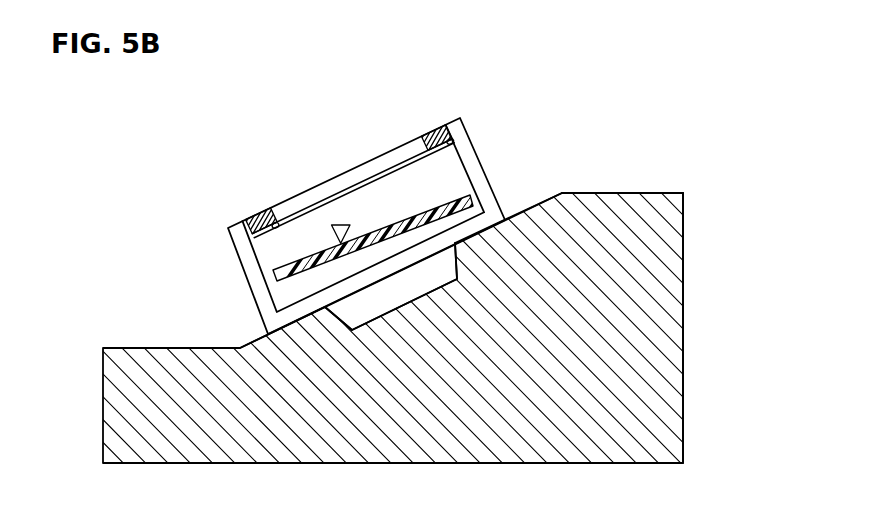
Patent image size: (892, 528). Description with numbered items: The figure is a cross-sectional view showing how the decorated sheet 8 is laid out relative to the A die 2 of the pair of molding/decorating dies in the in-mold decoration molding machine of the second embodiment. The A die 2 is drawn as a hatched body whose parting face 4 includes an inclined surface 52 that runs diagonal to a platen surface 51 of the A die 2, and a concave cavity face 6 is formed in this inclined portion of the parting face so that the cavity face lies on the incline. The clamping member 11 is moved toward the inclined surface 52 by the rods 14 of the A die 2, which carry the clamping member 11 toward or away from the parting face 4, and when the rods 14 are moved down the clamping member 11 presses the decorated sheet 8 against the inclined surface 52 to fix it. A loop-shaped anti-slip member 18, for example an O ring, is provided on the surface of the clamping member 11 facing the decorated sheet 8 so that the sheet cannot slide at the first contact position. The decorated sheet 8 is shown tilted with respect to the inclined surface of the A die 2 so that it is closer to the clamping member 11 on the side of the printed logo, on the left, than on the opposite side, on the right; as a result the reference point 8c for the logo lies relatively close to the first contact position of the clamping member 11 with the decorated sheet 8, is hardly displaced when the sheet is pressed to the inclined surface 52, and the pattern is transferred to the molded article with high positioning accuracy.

The A die 2 is at (669, 188).
The parting face 4 is at (158, 348).
The inclined surface 52 is at (523, 212).
The platen surface 51 is at (683, 302).
The concave cavity face 6 is at (388, 312).
The rods 14 is at (463, 140).
The loop-shaped anti-slip member 18 is at (385, 175).
The clamping member 11 is at (249, 212).
The decorated sheet 8 is at (413, 215).
The reference point 8c is at (345, 225).